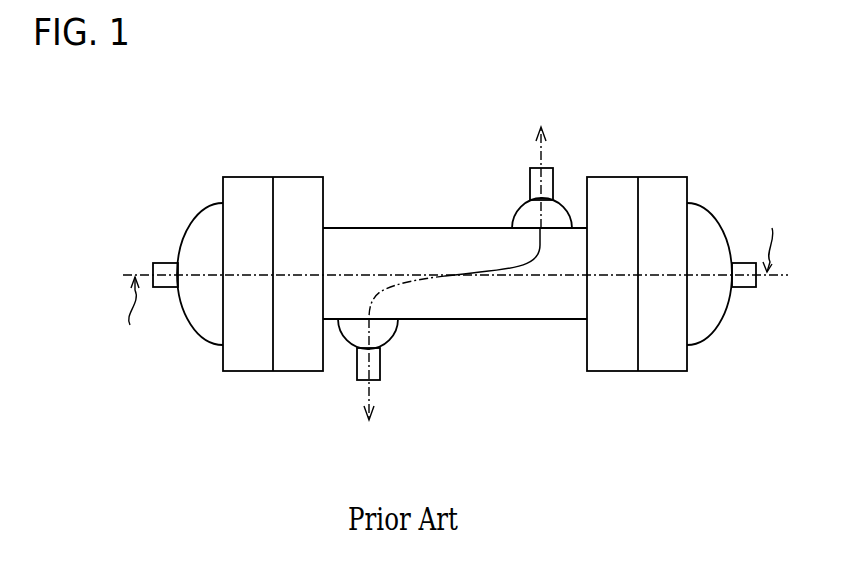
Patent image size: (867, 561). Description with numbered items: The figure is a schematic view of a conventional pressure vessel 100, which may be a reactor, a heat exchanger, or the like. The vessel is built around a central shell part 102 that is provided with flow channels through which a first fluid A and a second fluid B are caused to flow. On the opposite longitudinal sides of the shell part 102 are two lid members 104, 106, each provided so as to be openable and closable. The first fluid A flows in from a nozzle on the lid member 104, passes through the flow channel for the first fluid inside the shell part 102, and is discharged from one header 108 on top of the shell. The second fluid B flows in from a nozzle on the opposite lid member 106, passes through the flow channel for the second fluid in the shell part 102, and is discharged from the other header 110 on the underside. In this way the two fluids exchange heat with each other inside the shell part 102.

The conventional pressure vessel 100 is at (160, 144).
The shell part 102 is at (387, 228).
The lid member 104 is at (193, 318).
The lid member 106 is at (727, 317).
The header 108 is at (530, 180).
The header 110 is at (382, 370).